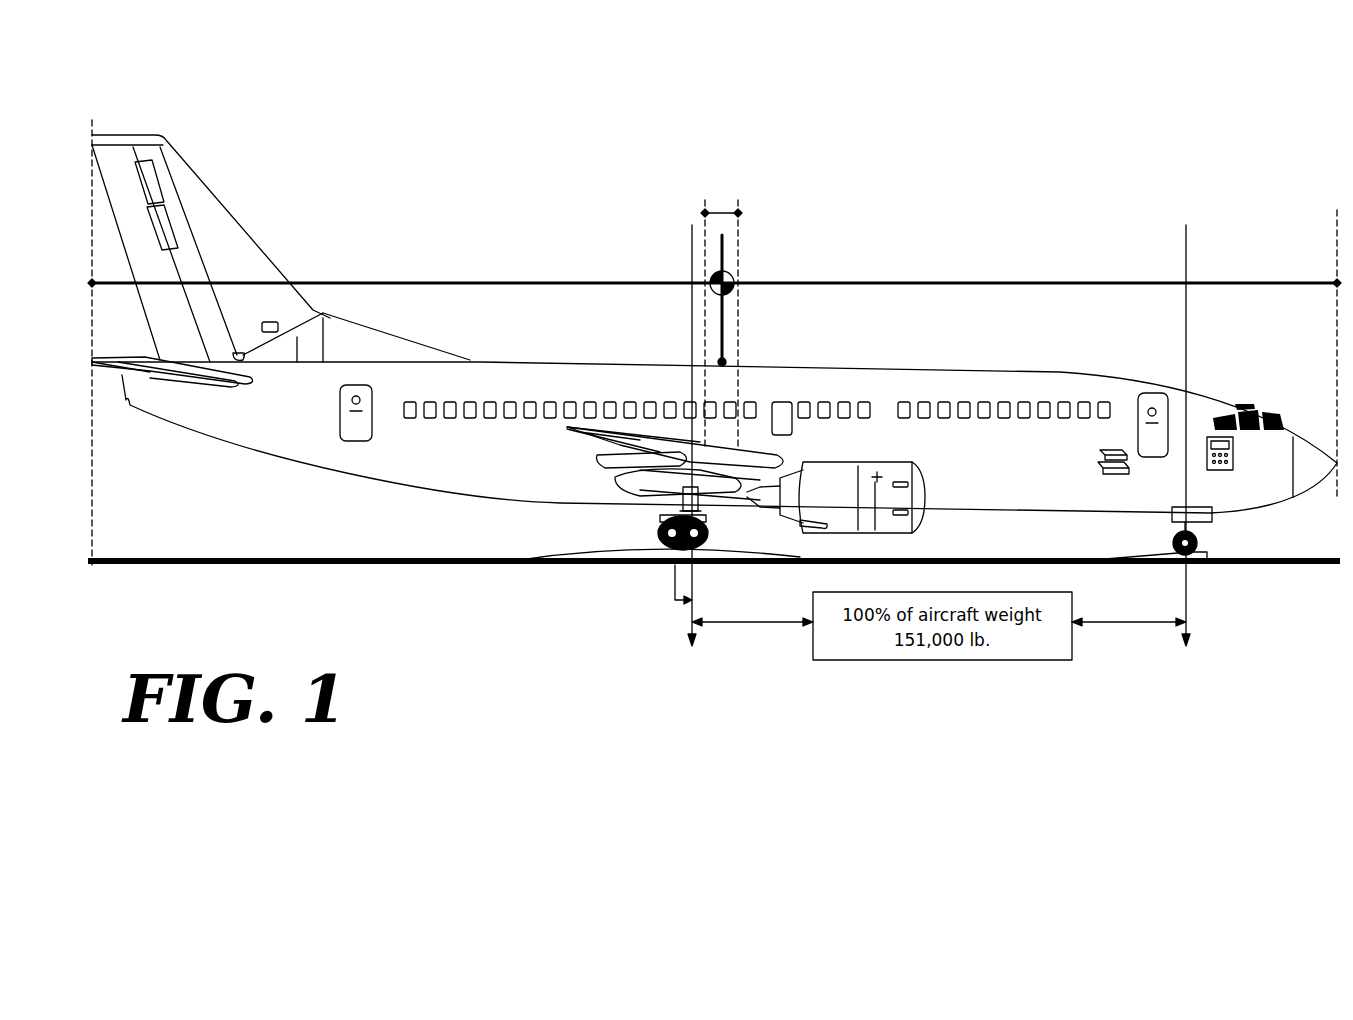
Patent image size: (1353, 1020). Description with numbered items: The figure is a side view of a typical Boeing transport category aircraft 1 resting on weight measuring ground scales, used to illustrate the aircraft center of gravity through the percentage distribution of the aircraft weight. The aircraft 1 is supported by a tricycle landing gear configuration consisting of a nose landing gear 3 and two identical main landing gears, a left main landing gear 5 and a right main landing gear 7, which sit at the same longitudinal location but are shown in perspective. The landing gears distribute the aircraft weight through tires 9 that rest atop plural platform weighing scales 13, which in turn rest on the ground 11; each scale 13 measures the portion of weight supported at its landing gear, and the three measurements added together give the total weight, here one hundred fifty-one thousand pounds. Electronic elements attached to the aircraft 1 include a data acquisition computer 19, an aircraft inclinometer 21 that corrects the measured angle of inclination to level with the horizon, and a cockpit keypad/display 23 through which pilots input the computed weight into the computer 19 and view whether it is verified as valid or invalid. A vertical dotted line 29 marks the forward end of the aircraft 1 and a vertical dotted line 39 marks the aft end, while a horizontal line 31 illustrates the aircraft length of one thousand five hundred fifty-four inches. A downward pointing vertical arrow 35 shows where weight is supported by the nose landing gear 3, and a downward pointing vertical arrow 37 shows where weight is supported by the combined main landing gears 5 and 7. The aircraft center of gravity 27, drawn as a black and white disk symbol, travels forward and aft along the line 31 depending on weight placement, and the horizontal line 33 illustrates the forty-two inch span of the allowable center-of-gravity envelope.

The aircraft 1 is at (822, 392).
The nose landing gear 3 is at (1195, 531).
The left main landing gear 5 is at (680, 516).
The right main landing gear 7 is at (712, 515).
The tires 9 is at (660, 536).
The ground 11 is at (345, 565).
The platform weighing scales 13 is at (735, 553).
The data acquisition computer 19 is at (1102, 450).
The aircraft inclinometer 21 is at (1125, 470).
The cockpit keypad/display 23 is at (1233, 452).
The aircraft center of gravity 27 is at (735, 283).
The vertical dotted line 29 is at (1335, 322).
The horizontal line 31 is at (480, 283).
The horizontal line 33 is at (720, 213).
The downward pointing vertical arrow 35 is at (1187, 268).
The downward pointing vertical arrow 37 is at (692, 257).
The vertical dotted line 39 is at (92, 400).